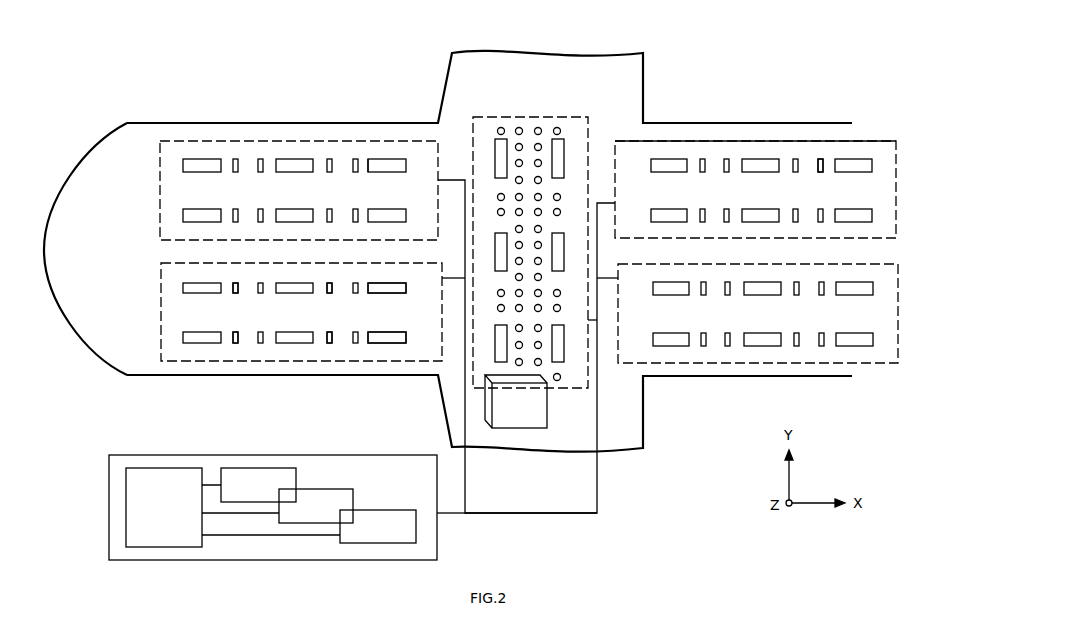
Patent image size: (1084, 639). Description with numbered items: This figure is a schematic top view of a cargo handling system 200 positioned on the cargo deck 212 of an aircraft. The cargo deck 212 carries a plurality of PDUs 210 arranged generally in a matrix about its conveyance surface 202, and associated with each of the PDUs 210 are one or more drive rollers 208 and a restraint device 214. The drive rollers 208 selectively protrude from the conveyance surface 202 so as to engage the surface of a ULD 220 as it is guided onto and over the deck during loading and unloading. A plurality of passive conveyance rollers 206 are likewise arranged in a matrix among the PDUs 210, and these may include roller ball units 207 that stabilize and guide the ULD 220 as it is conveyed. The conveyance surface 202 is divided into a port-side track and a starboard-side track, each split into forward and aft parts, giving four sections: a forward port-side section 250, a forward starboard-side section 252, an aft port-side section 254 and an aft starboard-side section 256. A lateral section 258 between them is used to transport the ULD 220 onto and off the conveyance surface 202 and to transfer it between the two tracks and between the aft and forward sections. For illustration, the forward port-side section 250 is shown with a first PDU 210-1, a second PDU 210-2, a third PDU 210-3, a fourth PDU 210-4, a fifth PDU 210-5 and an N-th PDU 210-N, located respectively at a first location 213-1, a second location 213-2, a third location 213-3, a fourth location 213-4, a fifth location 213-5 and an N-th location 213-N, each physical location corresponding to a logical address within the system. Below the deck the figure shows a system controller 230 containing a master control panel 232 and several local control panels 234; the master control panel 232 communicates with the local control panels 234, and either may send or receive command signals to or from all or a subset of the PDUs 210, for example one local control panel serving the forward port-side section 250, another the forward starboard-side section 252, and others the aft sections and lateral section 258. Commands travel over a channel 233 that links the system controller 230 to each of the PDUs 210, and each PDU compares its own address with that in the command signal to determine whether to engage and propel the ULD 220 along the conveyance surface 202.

The cargo handling system 200 is at (148, 65).
The conveyance surface 202 is at (656, 203).
The conveyance rollers 206 is at (820, 160).
The roller ball units 207 is at (558, 128).
The drive rollers 208 is at (400, 165).
The PDUs 210 is at (516, 252).
The cargo deck 212 is at (454, 223).
The restraint device 214 is at (368, 165).
The ULD 220 is at (506, 430).
The system controller 230 is at (245, 521).
The master control panel 232 is at (172, 547).
The channel 233 is at (575, 514).
The local control panels 234 is at (296, 478).
The forward port-side section 250 is at (160, 310).
The forward starboard-side section 252 is at (160, 200).
The aft port-side section 254 is at (898, 300).
The aft starboard-side section 256 is at (896, 192).
The lateral section 258 is at (477, 117).
The first PDU 210-1 is at (197, 283).
The second PDU 210-2 is at (292, 283).
The third PDU 210-3 is at (375, 283).
The fourth PDU 210-4 is at (222, 343).
The fifth PDU 210-5 is at (312, 343).
The N-th PDU 210-N is at (395, 343).
The first location 213-1 is at (229, 301).
The second location 213-2 is at (322, 301).
The third location 213-3 is at (397, 275).
The fourth location 213-4 is at (229, 349).
The fifth location 213-5 is at (322, 349).
The N-th location 213-N is at (409, 329).